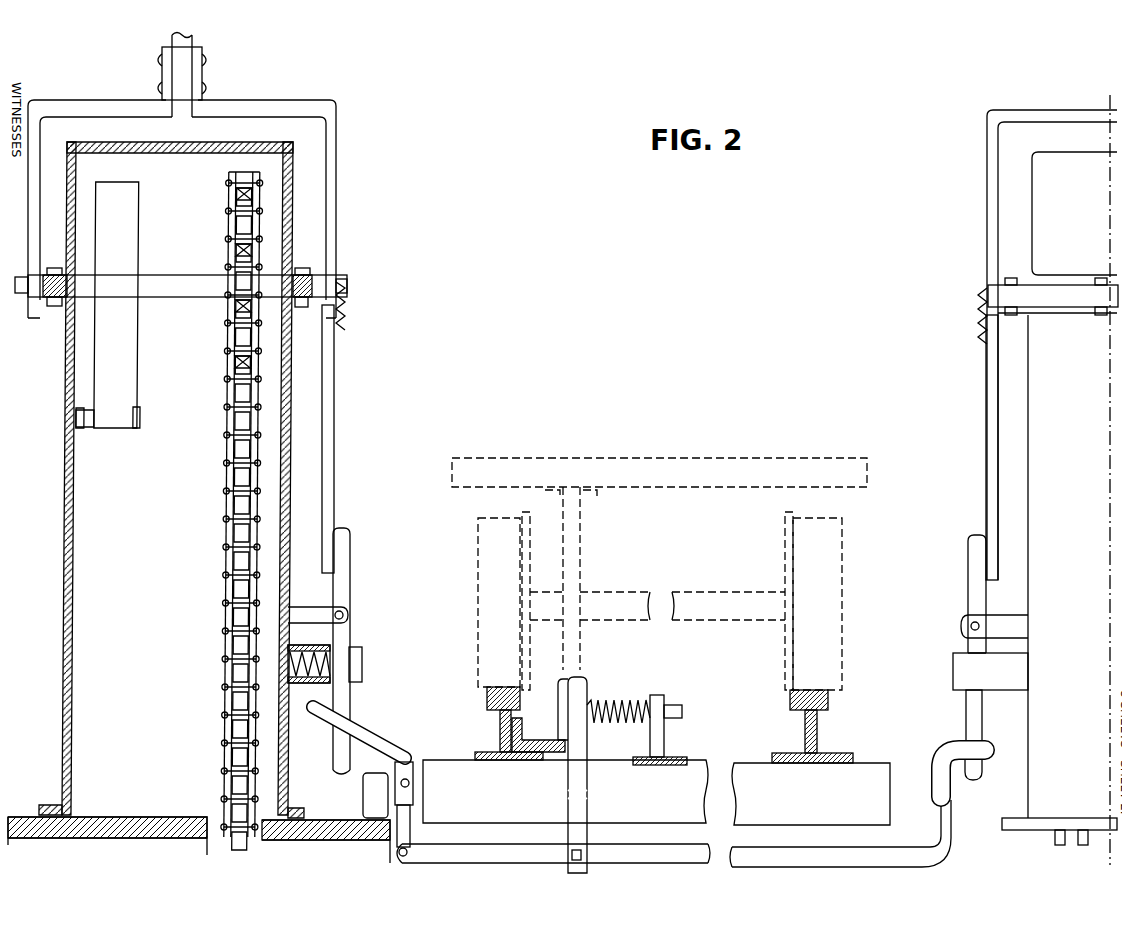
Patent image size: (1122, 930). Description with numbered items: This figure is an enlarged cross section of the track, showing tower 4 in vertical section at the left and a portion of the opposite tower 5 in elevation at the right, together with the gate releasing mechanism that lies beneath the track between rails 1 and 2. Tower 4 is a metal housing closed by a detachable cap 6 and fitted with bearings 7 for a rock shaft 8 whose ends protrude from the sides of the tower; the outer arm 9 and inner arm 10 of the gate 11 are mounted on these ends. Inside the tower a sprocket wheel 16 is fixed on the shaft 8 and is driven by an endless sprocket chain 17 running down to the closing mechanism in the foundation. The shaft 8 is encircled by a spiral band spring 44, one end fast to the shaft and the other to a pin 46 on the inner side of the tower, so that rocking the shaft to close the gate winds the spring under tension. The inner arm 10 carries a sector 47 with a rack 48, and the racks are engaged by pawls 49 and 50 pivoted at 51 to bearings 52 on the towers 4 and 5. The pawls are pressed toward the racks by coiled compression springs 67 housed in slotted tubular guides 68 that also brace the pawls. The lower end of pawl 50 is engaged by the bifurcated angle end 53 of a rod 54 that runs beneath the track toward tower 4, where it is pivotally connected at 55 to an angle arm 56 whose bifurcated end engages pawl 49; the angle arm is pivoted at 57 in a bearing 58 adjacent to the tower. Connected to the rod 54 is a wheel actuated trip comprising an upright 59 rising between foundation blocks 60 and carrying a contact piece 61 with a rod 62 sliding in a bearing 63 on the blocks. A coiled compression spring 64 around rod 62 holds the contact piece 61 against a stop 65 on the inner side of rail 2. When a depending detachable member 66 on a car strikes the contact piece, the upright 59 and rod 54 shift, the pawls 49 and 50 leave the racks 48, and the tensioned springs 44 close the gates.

The rail 1 is at (829, 700).
The rail 2 is at (487, 693).
The tower 4 is at (67, 527).
The tower 5 is at (1057, 498).
The detachable cap 6 is at (299, 222).
The bearing 7 is at (304, 310).
The rock shaft 8 is at (176, 290).
The outer arm 9 is at (28, 244).
The inner arm 10 is at (338, 190).
The gate 11 is at (172, 40).
The sprocket wheel 16 is at (236, 325).
The endless sprocket chain 17 is at (232, 577).
The spiral band spring 44 is at (118, 225).
The pin 46 is at (88, 428).
The sector 47 is at (334, 440).
The rack 48 is at (346, 324).
The pawl 49 is at (350, 545).
The pawl 50 is at (968, 563).
The pivot 51 is at (344, 616).
The bearing 52 is at (307, 612).
The bifurcated angle end 53 is at (935, 755).
The rod 54 is at (738, 852).
The pivotal connection 55 is at (428, 843).
The angle arm 56 is at (385, 745).
The pivot 57 is at (410, 782).
The bearing 58 is at (363, 793).
The upright 59 is at (588, 793).
The foundation block 60 is at (811, 794).
The contact piece 61 is at (583, 690).
The rod 62 is at (680, 712).
The bearing 63 is at (660, 697).
The coiled compression spring 64 is at (622, 705).
The stop 65 is at (532, 740).
The depending detachable member 66 is at (572, 537).
The coiled compression spring 67 is at (331, 664).
The slotted tubular guide 68 is at (362, 690).